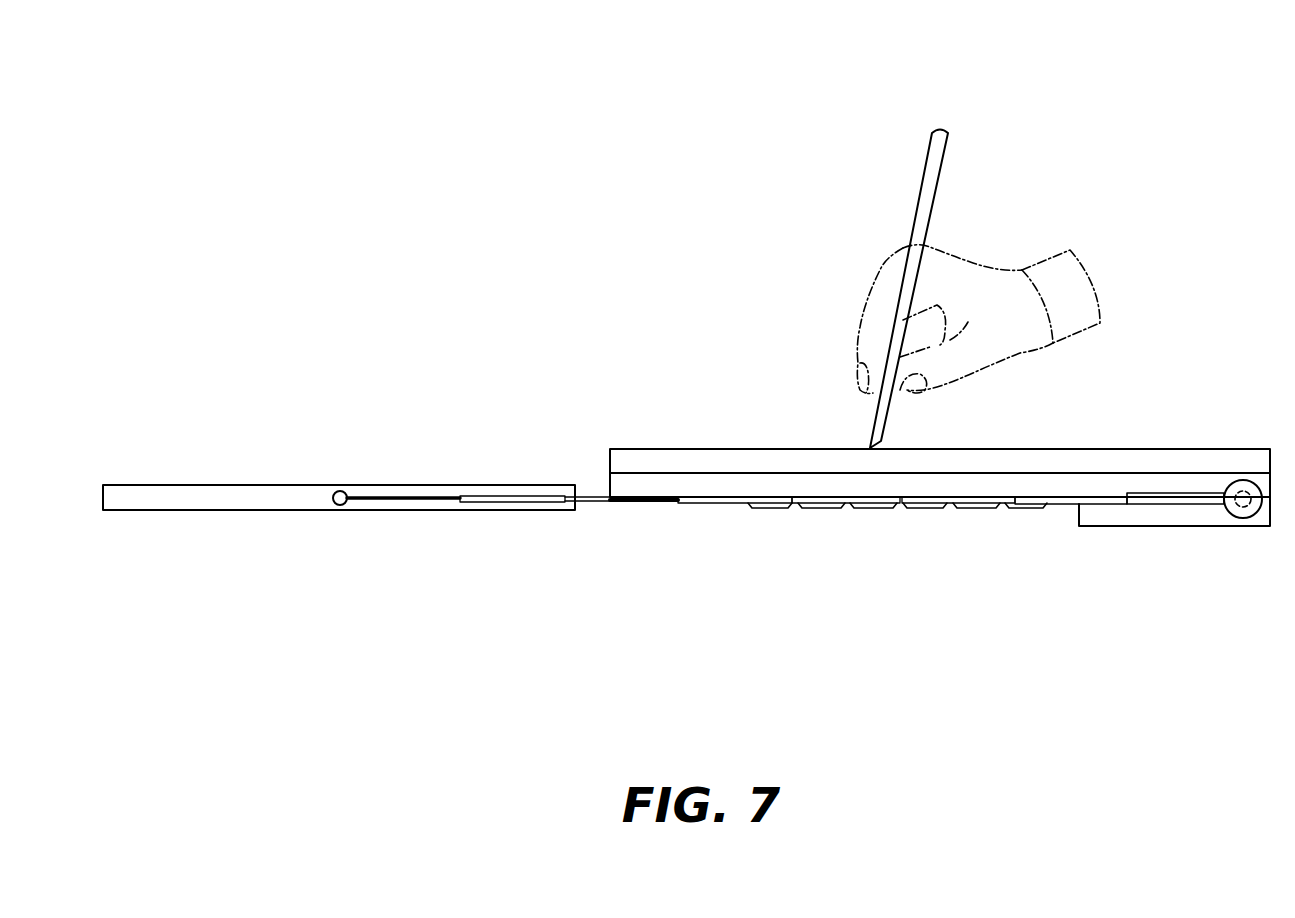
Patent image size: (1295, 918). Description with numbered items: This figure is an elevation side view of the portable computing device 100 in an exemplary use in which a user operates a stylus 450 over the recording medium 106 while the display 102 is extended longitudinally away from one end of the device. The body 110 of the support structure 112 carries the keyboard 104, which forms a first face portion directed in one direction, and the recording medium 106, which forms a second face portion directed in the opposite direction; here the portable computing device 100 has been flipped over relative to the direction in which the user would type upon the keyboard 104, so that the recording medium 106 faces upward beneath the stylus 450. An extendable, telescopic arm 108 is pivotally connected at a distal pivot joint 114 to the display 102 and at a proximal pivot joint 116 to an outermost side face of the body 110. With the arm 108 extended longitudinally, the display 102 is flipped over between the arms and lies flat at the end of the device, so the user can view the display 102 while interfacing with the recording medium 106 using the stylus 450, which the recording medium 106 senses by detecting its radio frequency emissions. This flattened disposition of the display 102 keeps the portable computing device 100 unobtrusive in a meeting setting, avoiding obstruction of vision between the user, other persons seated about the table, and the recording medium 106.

The portable computing device 100 is at (447, 74).
The display 102 is at (229, 494).
The keyboard 104 is at (922, 508).
The recording medium 106 is at (706, 449).
The arm 108 is at (1067, 500).
The body 110 is at (1120, 515).
The support structure 112 is at (1218, 540).
The distal pivot joint 114 is at (340, 490).
The proximal pivot joint 116 is at (1243, 486).
The stylus 450 is at (940, 138).